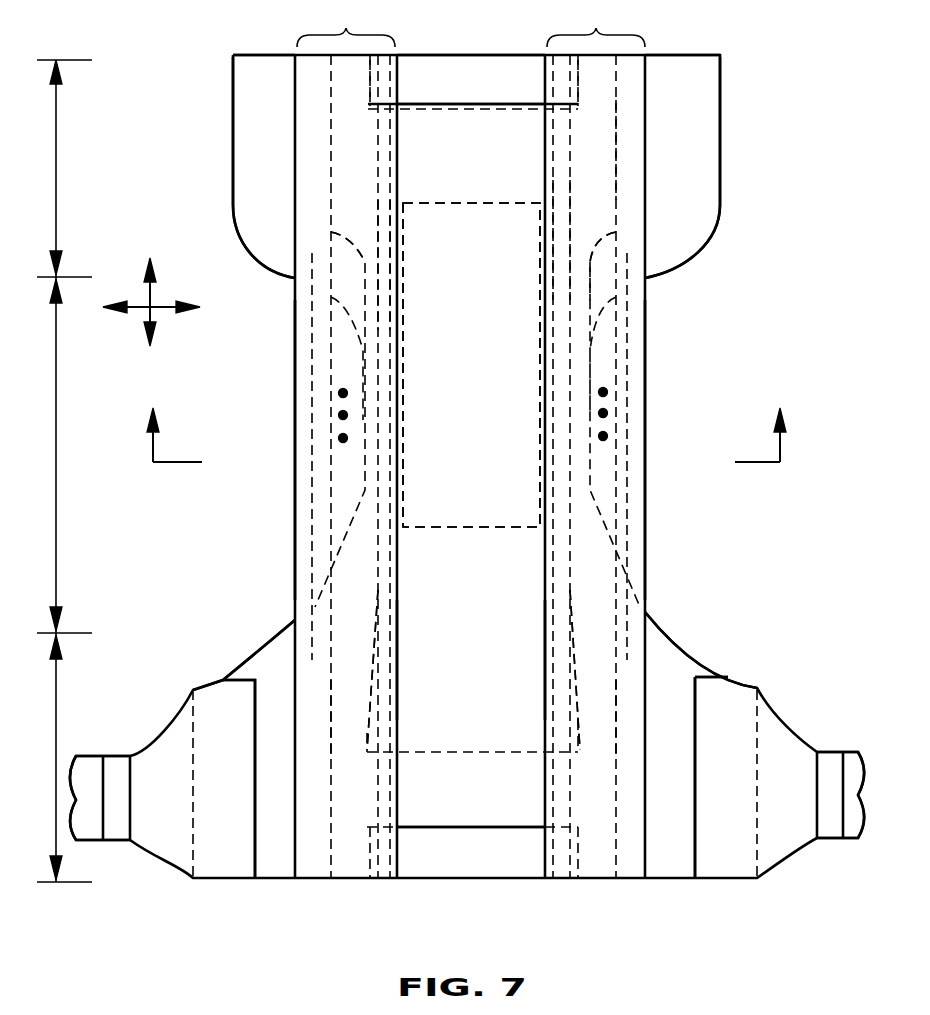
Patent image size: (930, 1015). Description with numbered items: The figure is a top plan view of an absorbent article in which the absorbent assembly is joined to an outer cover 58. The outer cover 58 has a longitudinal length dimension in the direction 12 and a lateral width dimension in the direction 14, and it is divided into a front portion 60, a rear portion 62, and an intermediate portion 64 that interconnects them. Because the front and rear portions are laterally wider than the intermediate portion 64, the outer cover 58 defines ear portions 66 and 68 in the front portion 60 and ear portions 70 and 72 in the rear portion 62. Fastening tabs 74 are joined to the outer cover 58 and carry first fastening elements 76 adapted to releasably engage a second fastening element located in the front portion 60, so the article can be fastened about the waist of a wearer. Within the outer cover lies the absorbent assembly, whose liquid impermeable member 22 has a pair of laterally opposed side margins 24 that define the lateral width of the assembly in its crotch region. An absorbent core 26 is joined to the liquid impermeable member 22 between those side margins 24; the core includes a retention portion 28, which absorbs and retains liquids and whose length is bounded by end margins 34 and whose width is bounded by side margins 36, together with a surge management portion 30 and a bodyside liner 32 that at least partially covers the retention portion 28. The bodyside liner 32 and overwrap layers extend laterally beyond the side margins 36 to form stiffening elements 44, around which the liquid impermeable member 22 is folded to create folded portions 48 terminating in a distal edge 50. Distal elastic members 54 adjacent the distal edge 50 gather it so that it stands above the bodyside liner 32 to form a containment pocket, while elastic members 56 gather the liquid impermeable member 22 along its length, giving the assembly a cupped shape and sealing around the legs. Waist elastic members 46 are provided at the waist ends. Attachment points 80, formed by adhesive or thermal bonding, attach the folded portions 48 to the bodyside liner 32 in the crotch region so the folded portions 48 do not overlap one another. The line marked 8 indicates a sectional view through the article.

The section line 8- 8 is at (466, 454).
The longitudinal direction 12 is at (152, 322).
The lateral direction 14 is at (152, 300).
The liquid impermeable member 22 is at (477, 808).
The laterally opposed side margins 24 is at (293, 530).
The absorbent core 26 is at (628, 180).
The retention portion 28 is at (598, 222).
The surge management portion 30 is at (470, 209).
The bodyside liner 32 is at (445, 168).
The end margins 34 is at (462, 108).
The side margins 36 is at (378, 605).
The stiffening elements 44 is at (345, 713).
The waist elastic members 46 is at (455, 66).
The folded portions 48 is at (346, 28).
The distal edge 50 is at (398, 655).
The distal elastic members 54 is at (570, 232).
The elastic members 56 is at (363, 268).
The outer cover 58 is at (278, 183).
The front portion 60 is at (57, 92).
The rear portion 62 is at (60, 852).
The intermediate portion 64 is at (58, 567).
The ear portion 66 is at (700, 93).
The ear portion 68 is at (255, 93).
The ear portion 70 is at (739, 660).
The ear portion 72 is at (245, 648).
The fastening tabs 74 is at (178, 808).
The first fastening elements 76 is at (120, 758).
The attachment points 80 is at (343, 438).